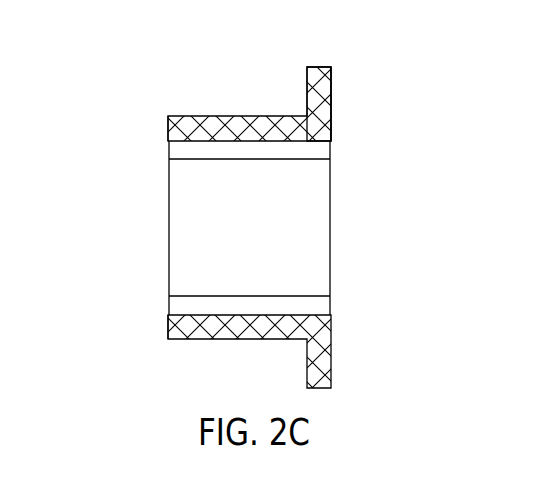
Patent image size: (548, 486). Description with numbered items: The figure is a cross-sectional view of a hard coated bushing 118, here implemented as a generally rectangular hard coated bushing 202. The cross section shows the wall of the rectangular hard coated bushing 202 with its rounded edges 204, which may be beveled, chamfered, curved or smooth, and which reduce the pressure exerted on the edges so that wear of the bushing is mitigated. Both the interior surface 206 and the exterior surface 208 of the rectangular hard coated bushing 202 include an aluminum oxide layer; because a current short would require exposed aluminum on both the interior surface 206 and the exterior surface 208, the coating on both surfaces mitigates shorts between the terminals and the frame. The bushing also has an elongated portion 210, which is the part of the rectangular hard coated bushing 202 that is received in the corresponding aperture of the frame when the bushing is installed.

The rectangular hard coated bushing 202 is at (265, 220).
The rounded edges 204 is at (168, 130).
The interior surface 206 is at (217, 116).
The exterior surface 208 is at (243, 159).
The elongated portion 210 is at (215, 340).
The hard coated bushing 118 is at (272, 115).